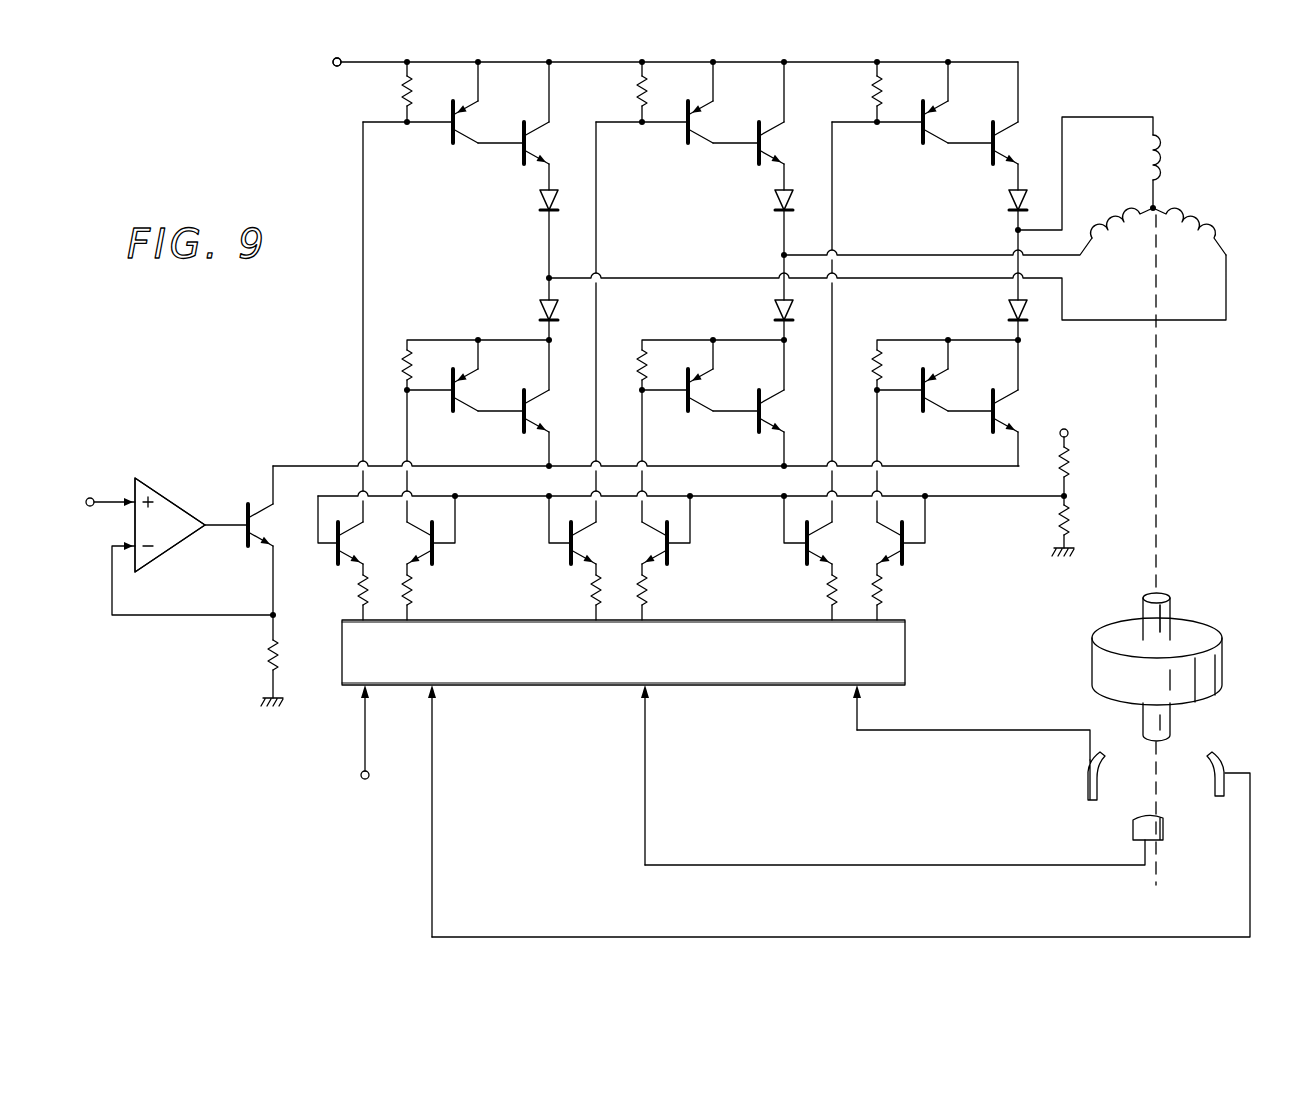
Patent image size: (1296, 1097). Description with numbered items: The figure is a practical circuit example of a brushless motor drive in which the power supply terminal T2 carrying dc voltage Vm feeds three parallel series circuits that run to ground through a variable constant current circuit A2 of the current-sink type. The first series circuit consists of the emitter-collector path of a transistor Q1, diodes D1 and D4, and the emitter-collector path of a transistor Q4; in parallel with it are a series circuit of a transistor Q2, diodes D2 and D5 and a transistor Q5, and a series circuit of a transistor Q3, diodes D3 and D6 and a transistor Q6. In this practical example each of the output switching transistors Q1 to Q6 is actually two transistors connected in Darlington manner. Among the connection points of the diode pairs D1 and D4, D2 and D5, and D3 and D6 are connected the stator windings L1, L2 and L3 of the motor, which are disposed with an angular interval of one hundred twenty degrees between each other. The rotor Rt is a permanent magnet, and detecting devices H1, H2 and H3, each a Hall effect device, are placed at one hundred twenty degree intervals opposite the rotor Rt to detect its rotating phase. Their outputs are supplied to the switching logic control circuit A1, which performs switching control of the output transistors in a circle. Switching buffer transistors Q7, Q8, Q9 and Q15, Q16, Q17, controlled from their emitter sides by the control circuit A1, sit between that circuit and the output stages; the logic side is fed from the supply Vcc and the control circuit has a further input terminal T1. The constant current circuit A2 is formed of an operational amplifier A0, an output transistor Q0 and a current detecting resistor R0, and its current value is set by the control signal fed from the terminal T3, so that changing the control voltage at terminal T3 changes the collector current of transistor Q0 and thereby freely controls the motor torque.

The dc voltage Vm is at (301, 65).
The power supply terminal T2 is at (337, 67).
The transistor Q3 is at (500, 213).
The diode D3 is at (546, 215).
The diode D6 is at (540, 312).
The transistor Q6 is at (500, 463).
The transistor Q2 is at (724, 208).
The diode D2 is at (779, 214).
The diode D5 is at (775, 314).
The transistor Q5 is at (736, 458).
The transistor Q1 is at (950, 208).
The diode D1 is at (1012, 213).
The diode D4 is at (1009, 312).
The transistor Q4 is at (971, 458).
The stator winding L1 is at (1146, 155).
The stator winding L2 is at (1112, 236).
The stator winding L3 is at (1196, 236).
The variable constant current circuit A2 is at (222, 463).
The operational amplifier A0 is at (172, 548).
The terminal T3 is at (88, 507).
The output transistor Q0 is at (250, 548).
The current detecting resistor R0 is at (266, 660).
The switching buffer transistor Q7 is at (332, 556).
The switching buffer transistor Q15 is at (436, 556).
The switching buffer transistor Q8 is at (565, 556).
The switching buffer transistor Q16 is at (671, 556).
The switching buffer transistor Q9 is at (801, 556).
The switching buffer transistor Q17 is at (906, 556).
The logic supply voltage terminal Vcc is at (1073, 478).
The switching logic control circuit A1 is at (553, 688).
The input terminal T1 is at (363, 780).
The rotor Rt is at (1212, 618).
The detecting device H1 is at (1088, 790).
The detecting device H2 is at (1166, 828).
The detecting device H3 is at (1218, 752).